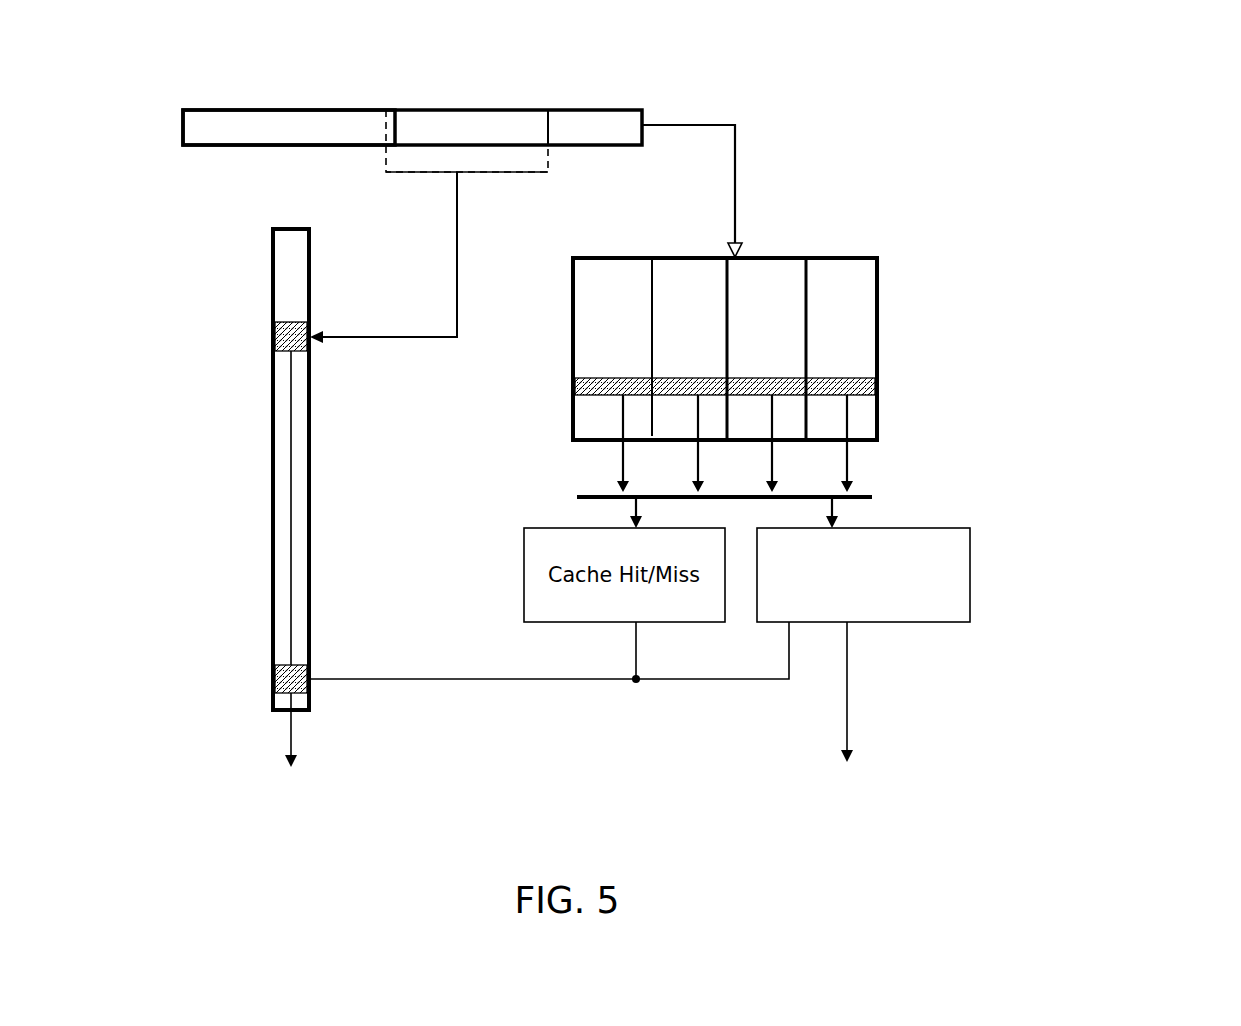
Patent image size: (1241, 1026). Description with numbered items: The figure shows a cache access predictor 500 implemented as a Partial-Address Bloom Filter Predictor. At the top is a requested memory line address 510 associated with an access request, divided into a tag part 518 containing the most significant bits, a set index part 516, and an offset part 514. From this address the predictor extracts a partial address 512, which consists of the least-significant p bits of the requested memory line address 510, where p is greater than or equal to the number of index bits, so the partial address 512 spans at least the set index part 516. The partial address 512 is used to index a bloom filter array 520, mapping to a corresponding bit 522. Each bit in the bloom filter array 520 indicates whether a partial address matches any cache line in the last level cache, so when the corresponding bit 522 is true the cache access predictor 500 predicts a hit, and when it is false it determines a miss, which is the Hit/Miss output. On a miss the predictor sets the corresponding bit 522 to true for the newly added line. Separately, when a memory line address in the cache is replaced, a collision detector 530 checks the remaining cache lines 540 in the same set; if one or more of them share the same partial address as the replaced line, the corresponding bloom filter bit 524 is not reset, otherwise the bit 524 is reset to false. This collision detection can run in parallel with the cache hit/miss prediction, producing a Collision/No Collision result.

The cache access predictor 500 is at (1231, 42).
The requested memory line address 510 is at (200, 165).
The partial address 512 is at (430, 174).
The offset part 514 is at (587, 108).
The set index part 516 is at (467, 108).
The tag part 518 is at (303, 108).
The bloom filter array 520 is at (248, 415).
The corresponding bit 522 is at (272, 345).
The corresponding bloom filter bit 524 is at (275, 688).
The collision detector 530 is at (882, 604).
The remaining cache lines 540 is at (888, 379).